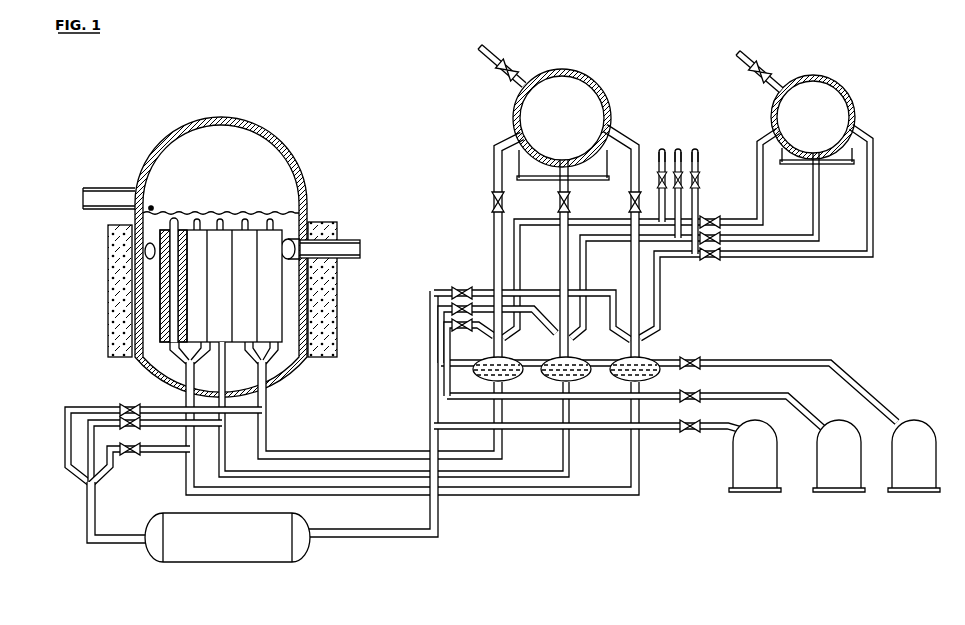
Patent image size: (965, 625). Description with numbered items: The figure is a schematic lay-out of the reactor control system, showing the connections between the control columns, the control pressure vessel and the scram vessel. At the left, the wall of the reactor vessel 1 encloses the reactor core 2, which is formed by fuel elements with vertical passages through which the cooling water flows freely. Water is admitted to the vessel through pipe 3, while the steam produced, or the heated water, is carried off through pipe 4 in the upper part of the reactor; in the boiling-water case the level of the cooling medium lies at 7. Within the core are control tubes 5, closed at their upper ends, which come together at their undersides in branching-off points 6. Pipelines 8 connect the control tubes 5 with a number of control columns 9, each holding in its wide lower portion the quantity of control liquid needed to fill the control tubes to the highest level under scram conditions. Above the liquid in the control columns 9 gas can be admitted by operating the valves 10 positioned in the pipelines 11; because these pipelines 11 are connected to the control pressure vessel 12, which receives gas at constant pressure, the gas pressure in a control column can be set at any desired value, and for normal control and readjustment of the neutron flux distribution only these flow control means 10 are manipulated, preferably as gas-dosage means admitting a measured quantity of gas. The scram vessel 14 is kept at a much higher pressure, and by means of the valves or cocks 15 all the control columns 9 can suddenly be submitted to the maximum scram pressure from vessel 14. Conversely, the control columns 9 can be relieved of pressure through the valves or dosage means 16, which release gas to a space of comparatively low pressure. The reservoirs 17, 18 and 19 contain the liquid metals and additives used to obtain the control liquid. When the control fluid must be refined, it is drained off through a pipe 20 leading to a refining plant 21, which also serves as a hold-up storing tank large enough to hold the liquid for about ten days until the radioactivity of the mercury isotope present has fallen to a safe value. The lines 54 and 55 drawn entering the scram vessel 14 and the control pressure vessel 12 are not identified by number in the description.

The reactor vessel wall 1 is at (307, 172).
The reactor core 2 is at (280, 230).
The pipe 3 is at (352, 254).
The pipe 4 is at (100, 186).
The control tubes 5 is at (170, 222).
The branching-off points 6 is at (180, 367).
The level of the cooling medium 7 is at (151, 208).
The pipelines 8 is at (360, 489).
The control columns 9 is at (556, 358).
The valves 10 is at (708, 260).
The pipelines 11 is at (757, 227).
The control pressure vessel 12 is at (428, 313).
The scram vessel 14 is at (546, 90).
The valves or cocks 15 is at (492, 205).
The valves or dosage means 16 is at (695, 150).
The reservoir 17 is at (742, 480).
The reservoir 18 is at (832, 478).
The reservoir 19 is at (907, 478).
The pipe 20 is at (87, 517).
The refining plant 21 is at (165, 548).
The supply pipe 54 is at (510, 62).
The supply pipe 55 is at (763, 66).